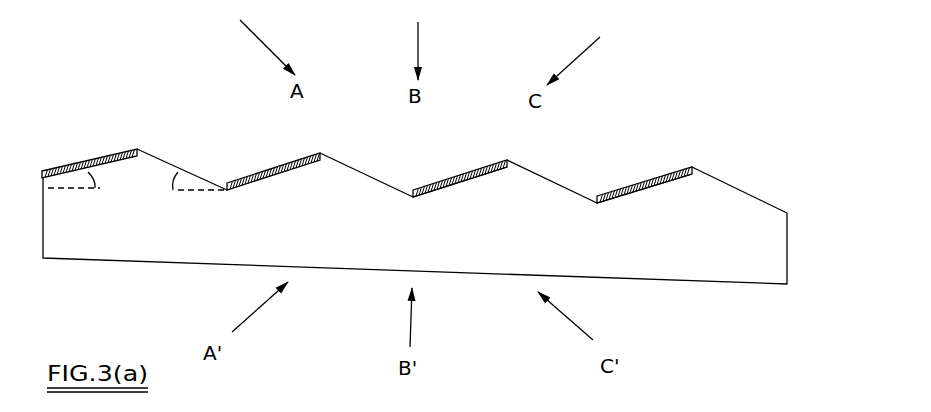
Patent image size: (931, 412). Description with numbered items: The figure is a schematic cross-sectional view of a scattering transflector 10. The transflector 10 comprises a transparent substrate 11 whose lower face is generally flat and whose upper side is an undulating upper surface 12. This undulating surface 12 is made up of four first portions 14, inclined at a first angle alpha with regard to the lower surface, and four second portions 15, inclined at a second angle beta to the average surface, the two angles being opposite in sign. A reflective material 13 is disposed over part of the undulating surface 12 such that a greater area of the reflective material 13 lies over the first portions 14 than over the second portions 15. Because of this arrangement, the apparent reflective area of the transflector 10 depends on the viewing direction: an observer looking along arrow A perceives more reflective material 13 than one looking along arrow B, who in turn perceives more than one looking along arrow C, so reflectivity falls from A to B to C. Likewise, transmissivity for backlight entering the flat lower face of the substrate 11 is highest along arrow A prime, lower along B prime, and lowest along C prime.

The scattering transflector 10 is at (428, 188).
The transparent substrate 11 is at (743, 283).
The undulating upper surface 12 is at (760, 202).
The reflective material 13 is at (638, 182).
The first portions 14 is at (442, 192).
The second portions 15 is at (557, 190).